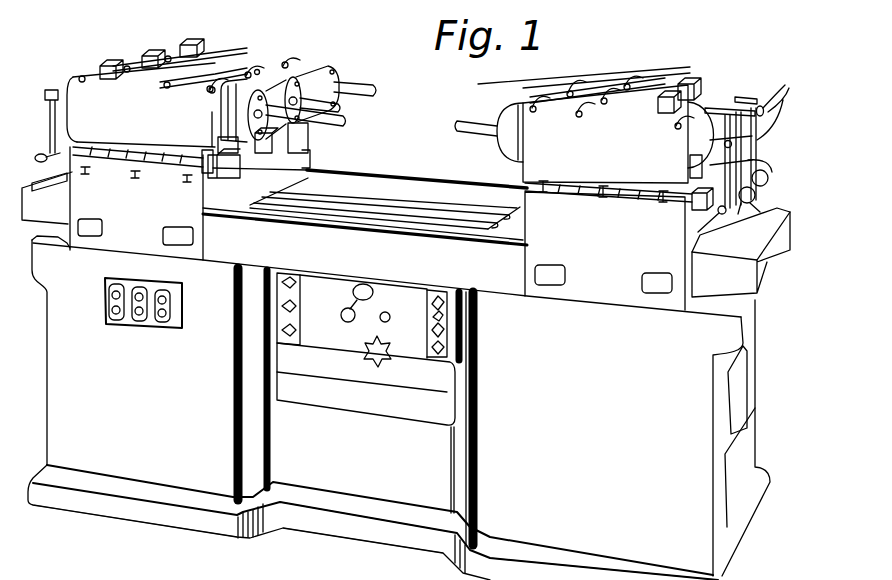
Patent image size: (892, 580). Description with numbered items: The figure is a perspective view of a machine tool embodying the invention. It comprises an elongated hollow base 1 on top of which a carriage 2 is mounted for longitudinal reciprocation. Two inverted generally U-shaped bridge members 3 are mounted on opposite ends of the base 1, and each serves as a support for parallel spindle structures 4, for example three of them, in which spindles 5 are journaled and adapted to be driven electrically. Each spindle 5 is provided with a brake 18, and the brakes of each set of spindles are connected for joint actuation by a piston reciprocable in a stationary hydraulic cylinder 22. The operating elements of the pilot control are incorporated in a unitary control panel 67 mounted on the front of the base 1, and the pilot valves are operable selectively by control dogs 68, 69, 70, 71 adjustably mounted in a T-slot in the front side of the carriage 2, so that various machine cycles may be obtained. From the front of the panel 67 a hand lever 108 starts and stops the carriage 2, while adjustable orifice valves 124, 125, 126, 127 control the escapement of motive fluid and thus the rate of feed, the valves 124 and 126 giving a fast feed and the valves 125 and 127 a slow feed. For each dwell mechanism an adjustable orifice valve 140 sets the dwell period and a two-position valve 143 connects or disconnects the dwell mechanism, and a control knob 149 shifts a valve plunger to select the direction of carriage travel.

The base 1 is at (62, 402).
The carriage 2 is at (410, 184).
The bridge member 3 is at (197, 188).
The spindle structure 4 is at (225, 75).
The spindle 5 is at (342, 120).
The brake 18 is at (62, 86).
The hydraulic cylinder 22 is at (758, 196).
The control panel 67 is at (407, 423).
The control dog 68 is at (360, 554).
The control dog 69 is at (368, 541).
The control dog 70 is at (556, 569).
The control dog 71 is at (135, 542).
The hand lever 108 is at (353, 293).
The orifice valve 124 is at (262, 279).
The orifice valve 125 is at (262, 305).
The orifice valve 126 is at (447, 302).
The orifice valve 127 is at (447, 330).
The restricted orifice valve 140 is at (262, 330).
The two-position valve 143 is at (262, 341).
The control knob 149 is at (374, 362).